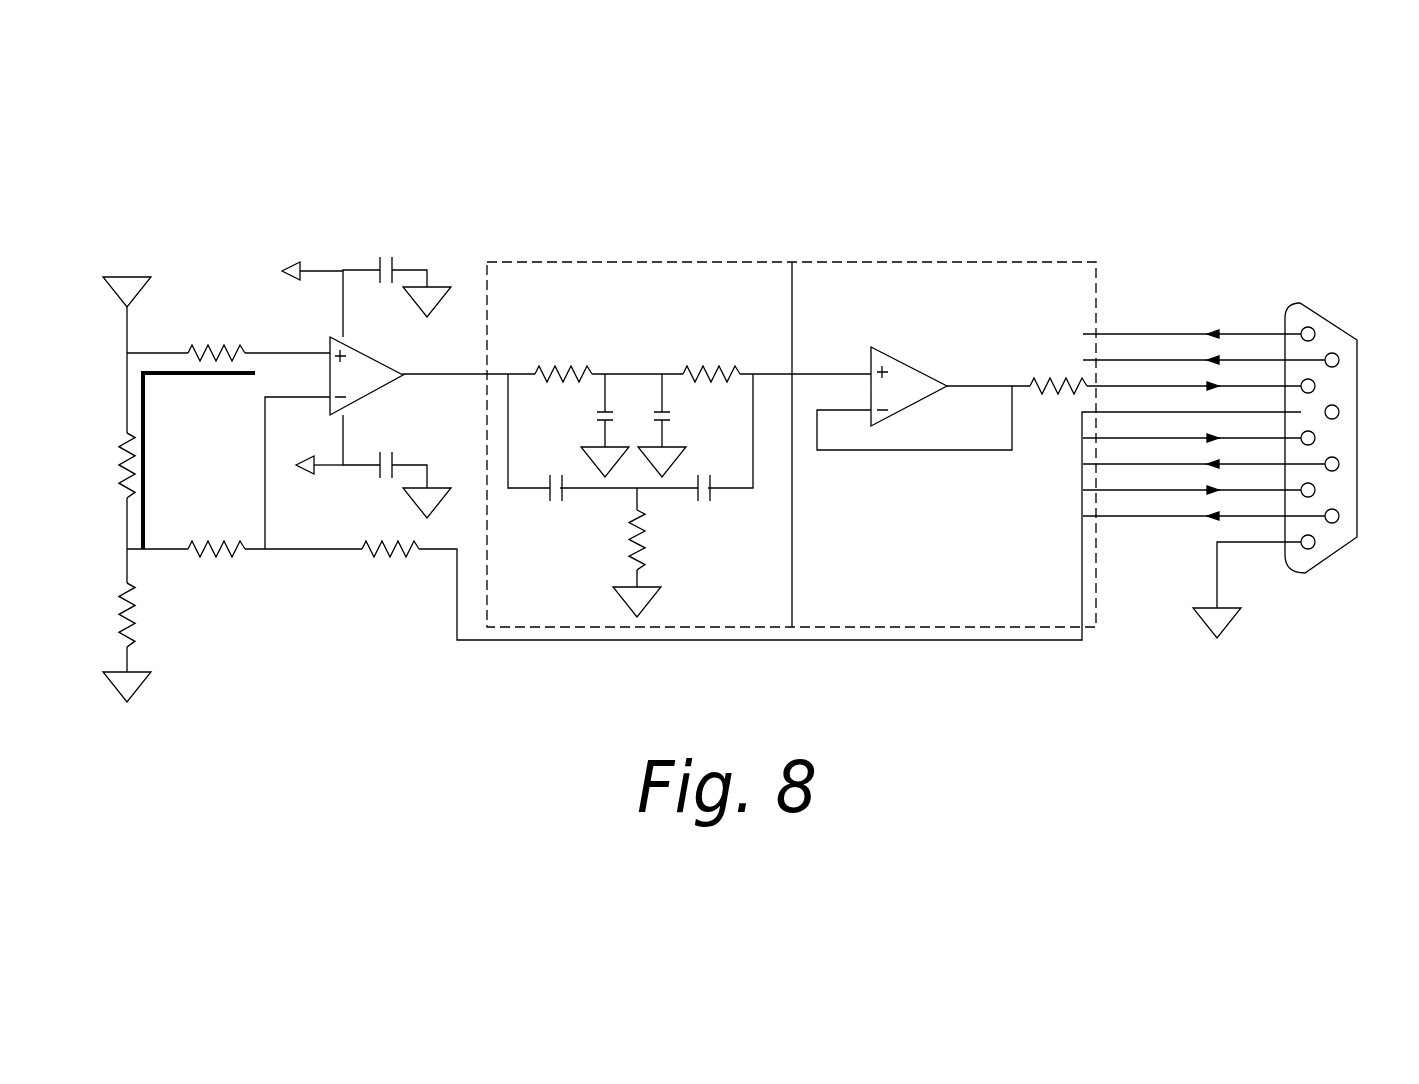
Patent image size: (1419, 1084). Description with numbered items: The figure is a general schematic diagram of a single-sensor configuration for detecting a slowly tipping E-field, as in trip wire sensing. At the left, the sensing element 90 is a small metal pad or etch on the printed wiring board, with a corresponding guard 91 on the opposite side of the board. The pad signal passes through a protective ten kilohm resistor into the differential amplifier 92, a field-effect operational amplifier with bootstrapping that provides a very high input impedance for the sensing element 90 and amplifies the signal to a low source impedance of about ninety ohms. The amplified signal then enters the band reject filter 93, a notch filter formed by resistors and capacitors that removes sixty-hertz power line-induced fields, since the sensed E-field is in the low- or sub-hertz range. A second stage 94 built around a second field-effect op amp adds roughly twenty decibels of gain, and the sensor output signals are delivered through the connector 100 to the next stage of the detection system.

The sensing element 90 is at (142, 243).
The guard 91 is at (172, 375).
The differential amplifier 92 is at (378, 357).
The band reject filter 93 is at (670, 262).
The second amplifier stage U2 94 is at (933, 262).
The connector J1 100 is at (1340, 327).